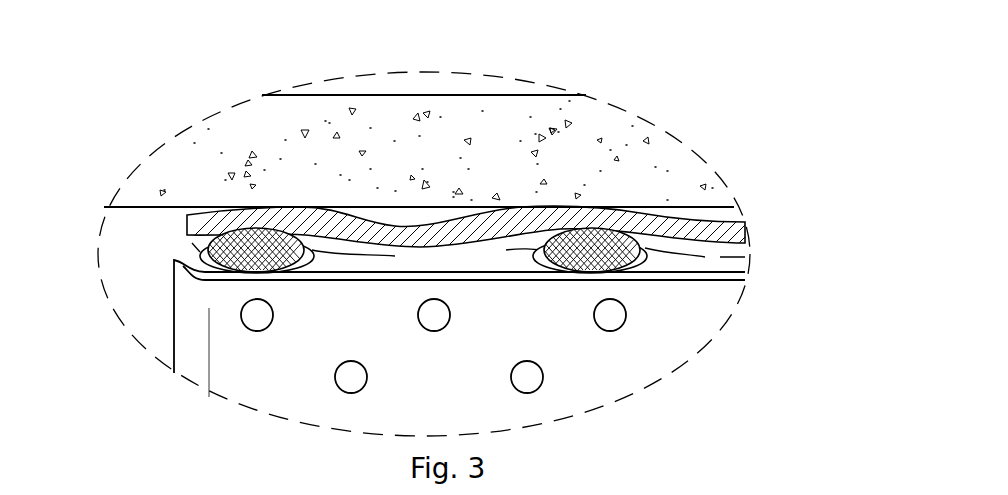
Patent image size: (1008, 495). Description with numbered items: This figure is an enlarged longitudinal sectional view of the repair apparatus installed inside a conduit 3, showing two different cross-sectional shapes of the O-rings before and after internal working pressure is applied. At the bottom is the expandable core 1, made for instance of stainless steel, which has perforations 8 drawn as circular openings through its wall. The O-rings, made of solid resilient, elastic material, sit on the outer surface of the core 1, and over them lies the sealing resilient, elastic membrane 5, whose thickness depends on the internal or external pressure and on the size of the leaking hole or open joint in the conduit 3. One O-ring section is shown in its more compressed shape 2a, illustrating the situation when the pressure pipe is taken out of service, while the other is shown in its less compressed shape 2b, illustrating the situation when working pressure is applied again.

The expandable core 1 is at (184, 277).
The more compressed shape 2a is at (655, 268).
The less compressed shape 2b is at (633, 230).
The conduit 3 is at (528, 132).
The sealing resilient, elastic membrane 5 is at (376, 222).
The perforations 8 is at (628, 327).